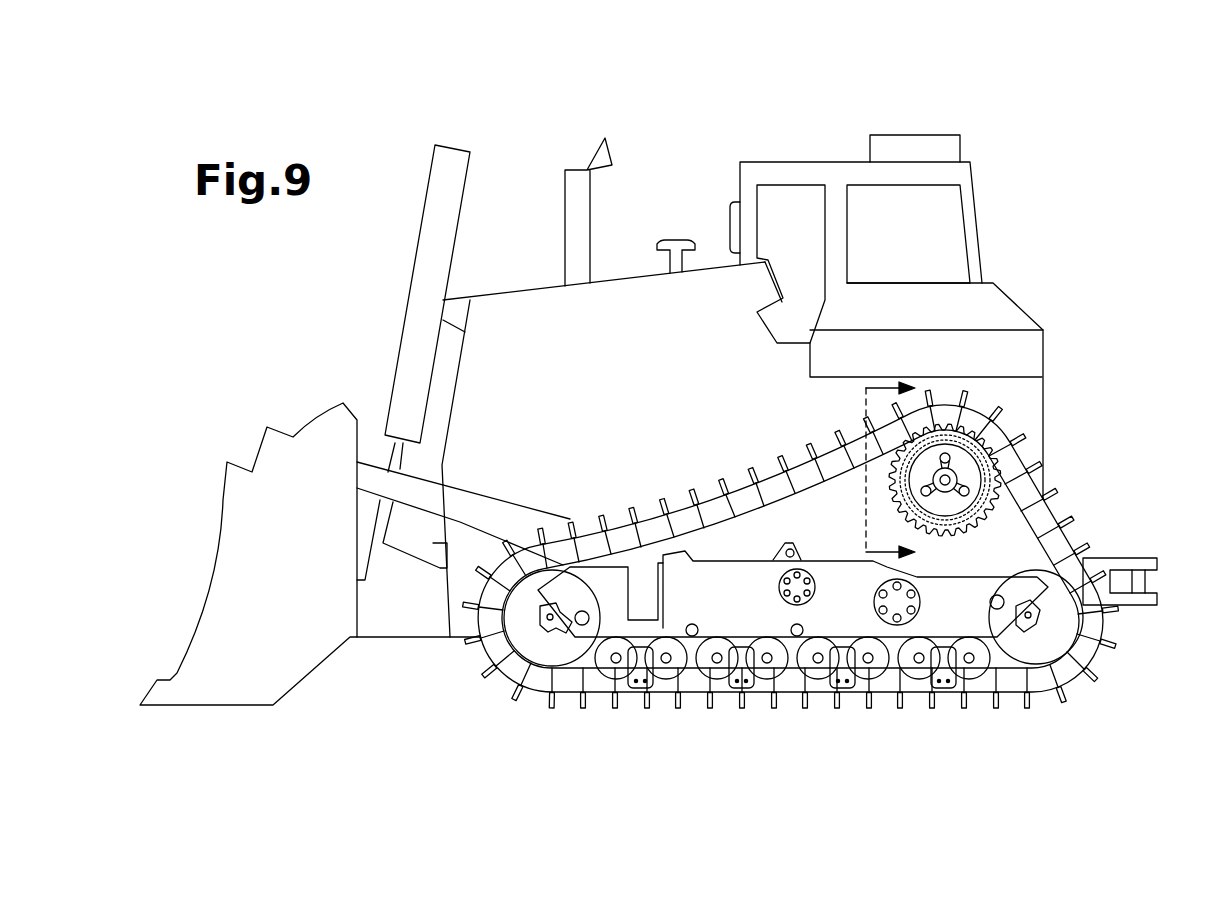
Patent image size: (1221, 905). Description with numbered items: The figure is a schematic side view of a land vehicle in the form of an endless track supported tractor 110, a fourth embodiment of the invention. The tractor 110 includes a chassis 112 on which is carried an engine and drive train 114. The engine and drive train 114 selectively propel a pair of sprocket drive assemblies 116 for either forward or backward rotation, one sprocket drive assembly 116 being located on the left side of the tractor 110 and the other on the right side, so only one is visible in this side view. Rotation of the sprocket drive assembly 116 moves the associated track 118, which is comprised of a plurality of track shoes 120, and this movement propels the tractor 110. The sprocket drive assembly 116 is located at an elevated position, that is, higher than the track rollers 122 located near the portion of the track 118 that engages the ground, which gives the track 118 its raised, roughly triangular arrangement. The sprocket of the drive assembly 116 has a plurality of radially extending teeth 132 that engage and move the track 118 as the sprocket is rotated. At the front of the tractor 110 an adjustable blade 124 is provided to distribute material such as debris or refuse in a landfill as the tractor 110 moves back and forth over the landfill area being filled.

The tractor 110 is at (733, 96).
The chassis 112 is at (1017, 307).
The engine and drive train 114 is at (527, 292).
The sprocket drive assembly 116 is at (990, 493).
The track 118 is at (1037, 688).
The track shoes 120 is at (1087, 673).
The track rollers 122 is at (1033, 570).
The adjustable blade 124 is at (220, 524).
The radially extending teeth 132 is at (897, 494).